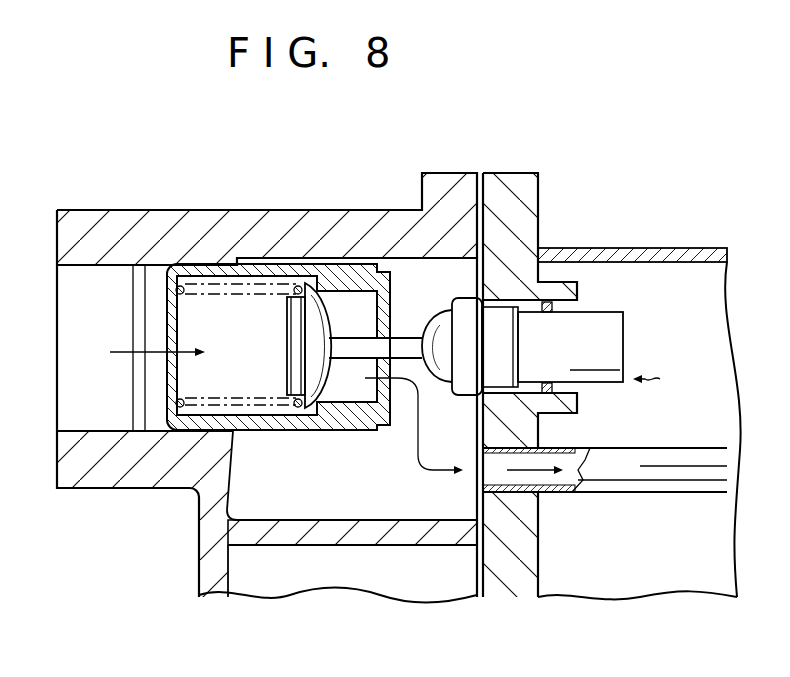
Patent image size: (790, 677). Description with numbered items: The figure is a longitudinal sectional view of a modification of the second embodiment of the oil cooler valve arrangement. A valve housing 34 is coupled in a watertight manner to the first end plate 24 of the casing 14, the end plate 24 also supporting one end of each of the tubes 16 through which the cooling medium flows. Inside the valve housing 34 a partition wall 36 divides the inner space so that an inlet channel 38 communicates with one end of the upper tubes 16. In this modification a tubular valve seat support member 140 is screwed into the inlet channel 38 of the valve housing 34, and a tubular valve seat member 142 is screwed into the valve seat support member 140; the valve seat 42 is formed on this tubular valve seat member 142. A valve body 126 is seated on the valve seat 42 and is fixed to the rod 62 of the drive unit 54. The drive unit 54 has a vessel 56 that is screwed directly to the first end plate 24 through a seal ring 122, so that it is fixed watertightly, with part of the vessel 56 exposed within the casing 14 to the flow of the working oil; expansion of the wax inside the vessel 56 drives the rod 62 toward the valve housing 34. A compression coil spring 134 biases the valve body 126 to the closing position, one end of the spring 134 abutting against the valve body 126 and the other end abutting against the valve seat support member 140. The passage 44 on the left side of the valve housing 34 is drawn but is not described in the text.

The casing 14 is at (632, 248).
The tubes 16 is at (670, 478).
The first end plate 24 is at (511, 173).
The valve housing 34 is at (103, 478).
The partition wall 36 is at (418, 532).
The inlet channel 38 is at (315, 512).
The valve seat 42 is at (329, 296).
The inlet bore 44 is at (81, 266).
The drive unit 54 is at (665, 379).
The vessel 56 is at (625, 315).
The rod 62 is at (405, 339).
The seal ring 122 is at (553, 393).
The valve body 126 is at (280, 367).
The compression coil spring 134 is at (223, 294).
The valve seat support member 140 is at (199, 277).
The valve seat member 142 is at (392, 272).